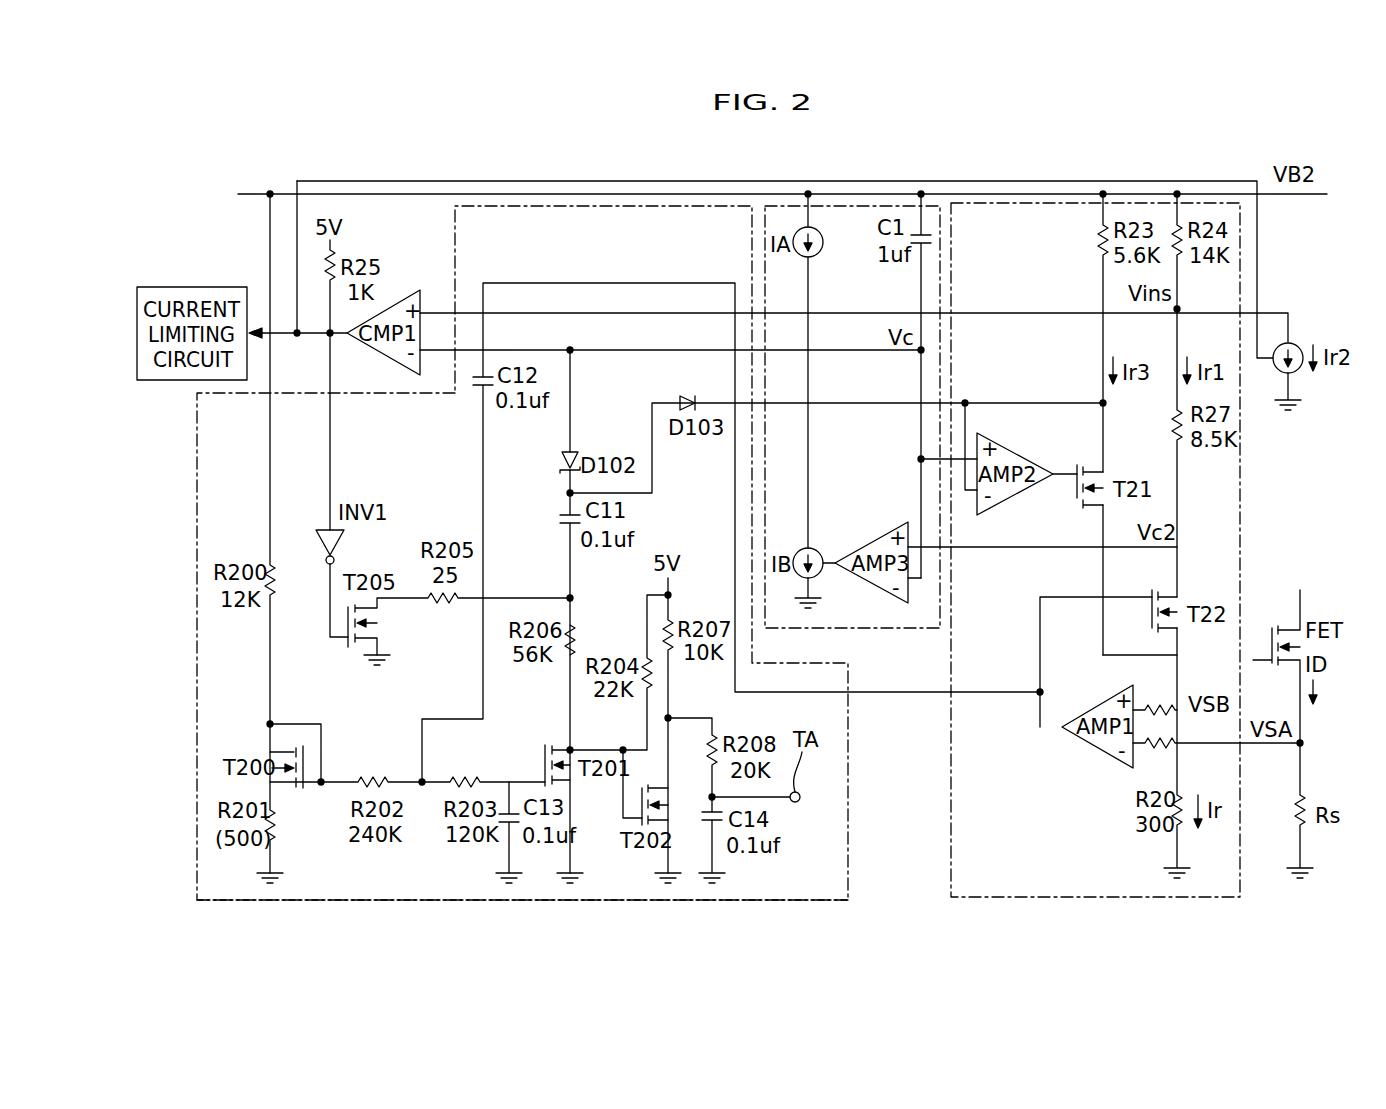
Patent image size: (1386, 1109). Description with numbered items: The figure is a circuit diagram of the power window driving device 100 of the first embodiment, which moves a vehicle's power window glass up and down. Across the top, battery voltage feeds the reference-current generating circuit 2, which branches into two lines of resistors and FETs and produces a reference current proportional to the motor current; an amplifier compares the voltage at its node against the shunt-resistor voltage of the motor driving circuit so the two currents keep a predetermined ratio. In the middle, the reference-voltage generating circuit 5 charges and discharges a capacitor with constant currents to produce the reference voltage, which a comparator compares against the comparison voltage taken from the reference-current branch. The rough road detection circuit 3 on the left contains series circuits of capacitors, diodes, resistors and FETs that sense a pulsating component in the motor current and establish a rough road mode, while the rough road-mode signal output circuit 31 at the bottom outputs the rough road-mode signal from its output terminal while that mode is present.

The reference-current generating circuit 2 is at (1000, 203).
The rough road detection circuit 3 is at (552, 206).
The reference-voltage generating circuit 5 is at (846, 206).
The rough road-mode signal output circuit 31 is at (640, 893).
The power window driving device 100 is at (602, 166).